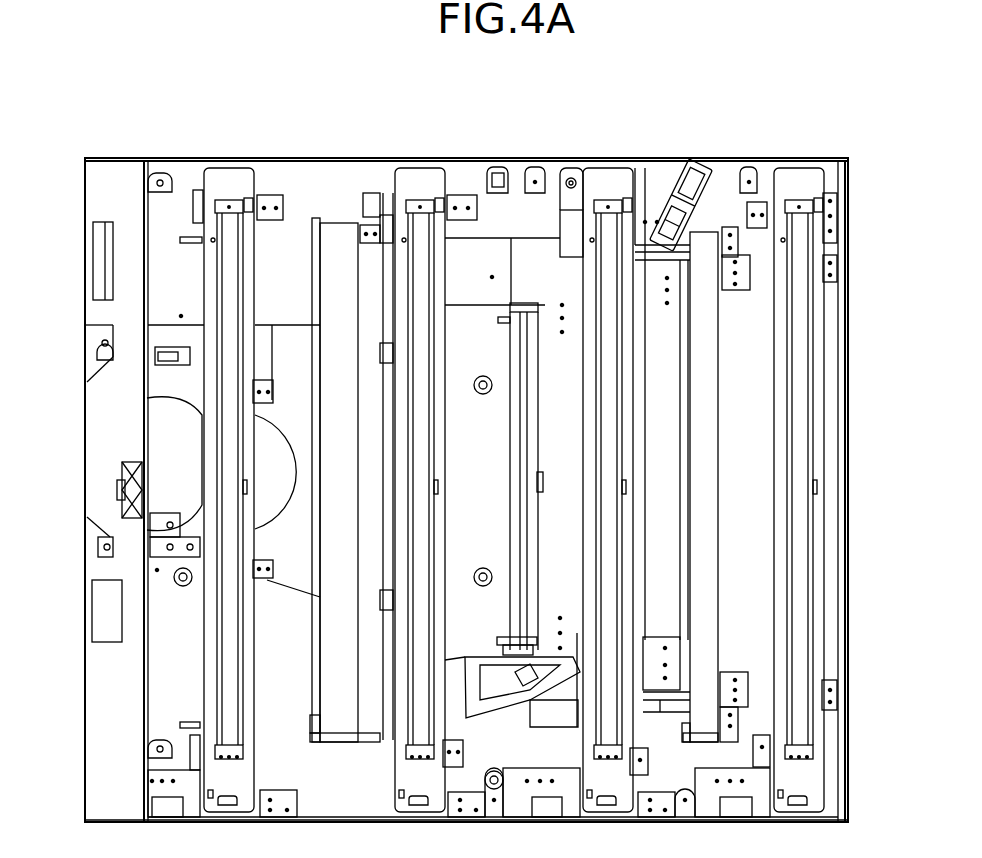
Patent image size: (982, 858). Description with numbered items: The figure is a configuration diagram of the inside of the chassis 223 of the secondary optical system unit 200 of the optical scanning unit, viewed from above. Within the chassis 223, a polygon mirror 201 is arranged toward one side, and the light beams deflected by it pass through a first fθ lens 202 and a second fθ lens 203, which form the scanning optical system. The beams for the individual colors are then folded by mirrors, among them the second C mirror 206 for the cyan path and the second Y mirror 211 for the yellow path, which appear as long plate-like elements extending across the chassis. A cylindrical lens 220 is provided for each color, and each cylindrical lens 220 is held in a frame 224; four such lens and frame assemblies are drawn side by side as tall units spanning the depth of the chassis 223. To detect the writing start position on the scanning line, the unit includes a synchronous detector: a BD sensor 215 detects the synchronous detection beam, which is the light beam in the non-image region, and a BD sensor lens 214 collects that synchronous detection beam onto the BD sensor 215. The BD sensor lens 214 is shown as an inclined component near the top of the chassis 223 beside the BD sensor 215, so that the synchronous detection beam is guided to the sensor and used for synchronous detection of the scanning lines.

The secondary optical system unit 200 is at (845, 118).
The polygon mirror 201 is at (157, 450).
The first fθ lens 202 is at (283, 520).
The second fθ lens 203 is at (380, 395).
The second C mirror 206 is at (710, 633).
The second Y mirror 211 is at (323, 168).
The BD sensor lens 214 is at (710, 168).
The BD sensor 215 is at (645, 168).
The cylindrical lens 220 is at (216, 213).
The chassis 223 is at (845, 312).
The frame 224 is at (236, 168).